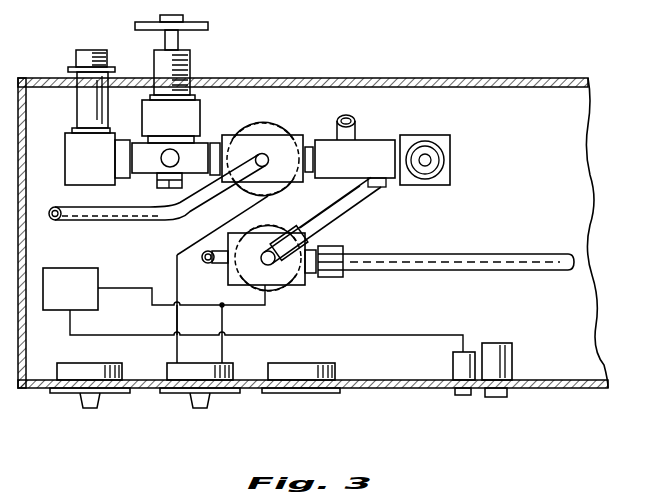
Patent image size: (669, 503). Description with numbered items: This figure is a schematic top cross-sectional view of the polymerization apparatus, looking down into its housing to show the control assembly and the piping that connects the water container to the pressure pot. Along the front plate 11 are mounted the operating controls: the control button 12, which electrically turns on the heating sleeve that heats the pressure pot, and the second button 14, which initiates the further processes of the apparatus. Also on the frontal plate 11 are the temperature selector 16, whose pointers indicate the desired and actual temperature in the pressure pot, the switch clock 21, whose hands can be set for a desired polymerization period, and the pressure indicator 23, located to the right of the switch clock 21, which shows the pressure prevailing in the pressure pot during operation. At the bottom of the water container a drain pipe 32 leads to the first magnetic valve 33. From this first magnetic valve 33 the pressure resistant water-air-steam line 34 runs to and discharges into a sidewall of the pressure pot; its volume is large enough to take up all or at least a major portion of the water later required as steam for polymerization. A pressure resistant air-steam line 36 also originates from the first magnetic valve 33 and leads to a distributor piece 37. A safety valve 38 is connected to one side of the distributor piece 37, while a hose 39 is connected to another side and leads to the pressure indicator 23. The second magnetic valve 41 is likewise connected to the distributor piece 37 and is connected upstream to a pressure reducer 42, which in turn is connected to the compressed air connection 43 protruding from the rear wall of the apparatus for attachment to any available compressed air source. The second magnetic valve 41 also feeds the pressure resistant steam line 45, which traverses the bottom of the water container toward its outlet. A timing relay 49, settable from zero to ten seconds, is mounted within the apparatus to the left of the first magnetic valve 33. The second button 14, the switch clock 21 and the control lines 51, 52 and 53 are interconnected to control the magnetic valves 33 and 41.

The front plate 11 is at (405, 390).
The control button 12 is at (500, 398).
The second button 14 is at (462, 398).
The temperature selector 16 is at (72, 396).
The switch clock 21 is at (192, 396).
The pressure indicator 23 is at (298, 396).
The drain pipe 32 is at (216, 264).
The first magnetic valve 33 is at (283, 290).
The water-air-steam line 34 is at (462, 254).
The air-steam line 36 is at (360, 207).
The distributor piece 37 is at (380, 140).
The safety valve 38 is at (449, 134).
The hose 39 is at (362, 116).
The second magnetic valve 41 is at (266, 132).
The pressure reducer 42 is at (176, 101).
The compressed air connection 43 is at (84, 54).
The steam line 45 is at (158, 221).
The timing relay 49 is at (70, 289).
The control line 51 is at (358, 335).
The control line 52 is at (119, 288).
The control line 53 is at (177, 318).